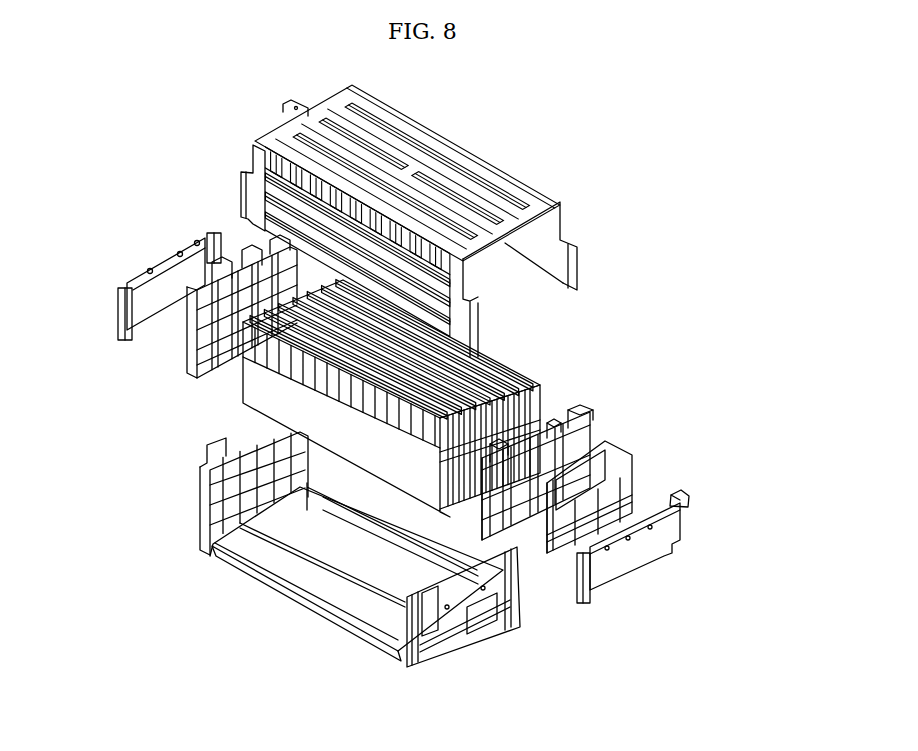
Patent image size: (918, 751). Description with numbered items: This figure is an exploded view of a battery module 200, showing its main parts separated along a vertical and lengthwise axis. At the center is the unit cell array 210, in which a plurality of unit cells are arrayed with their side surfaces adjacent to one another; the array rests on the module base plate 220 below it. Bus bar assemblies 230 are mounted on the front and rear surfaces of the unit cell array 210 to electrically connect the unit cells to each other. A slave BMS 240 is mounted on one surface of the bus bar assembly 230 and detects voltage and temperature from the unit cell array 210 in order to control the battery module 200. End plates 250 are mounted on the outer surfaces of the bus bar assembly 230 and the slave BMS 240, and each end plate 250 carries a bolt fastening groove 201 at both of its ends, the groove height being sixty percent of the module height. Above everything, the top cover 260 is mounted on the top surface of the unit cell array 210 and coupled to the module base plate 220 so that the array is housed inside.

The battery module 200 is at (162, 115).
The bolt fastening groove 201 is at (682, 497).
The unit cell array 210 is at (503, 363).
The module base plate 220 is at (300, 600).
The bus bar assembly 230 is at (592, 403).
The slave BMS 240 is at (626, 463).
The end plate 250 is at (623, 563).
The top cover 260 is at (457, 147).